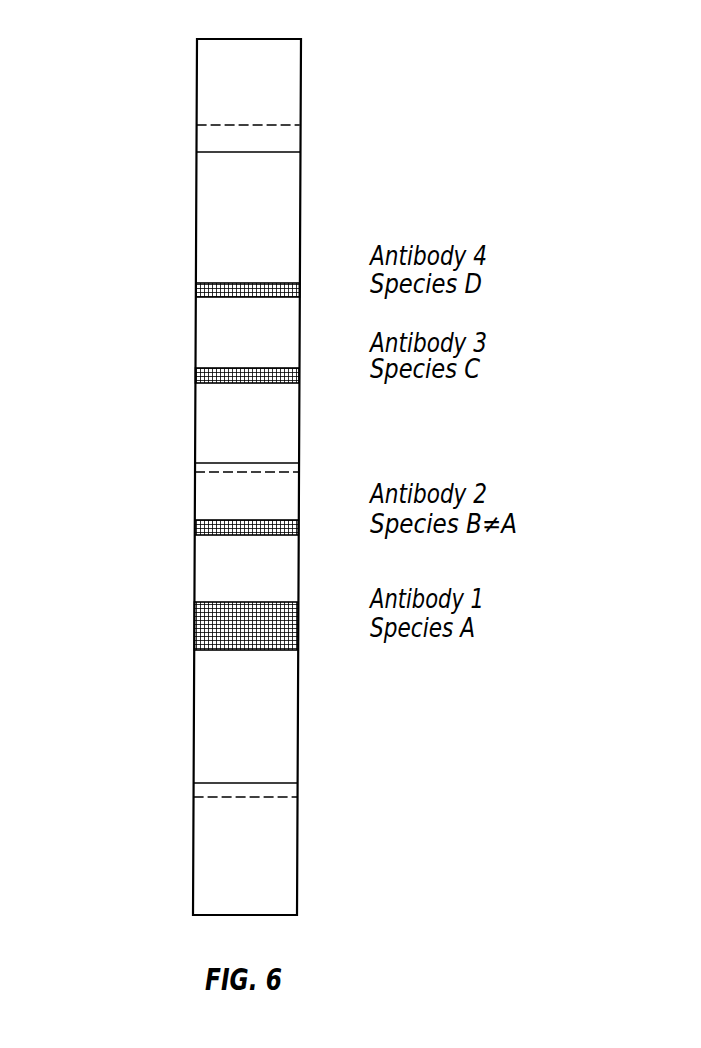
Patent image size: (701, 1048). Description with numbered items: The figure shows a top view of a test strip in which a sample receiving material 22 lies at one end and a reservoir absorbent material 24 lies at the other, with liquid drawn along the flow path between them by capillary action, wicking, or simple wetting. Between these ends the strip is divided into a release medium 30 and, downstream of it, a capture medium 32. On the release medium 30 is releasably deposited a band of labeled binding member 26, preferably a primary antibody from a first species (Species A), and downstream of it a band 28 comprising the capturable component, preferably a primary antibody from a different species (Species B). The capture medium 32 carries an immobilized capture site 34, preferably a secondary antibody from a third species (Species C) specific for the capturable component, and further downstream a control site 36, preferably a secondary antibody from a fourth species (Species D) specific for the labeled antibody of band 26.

The sample receiving material 22 is at (297, 858).
The reservoir absorbent material 24 is at (301, 98).
The band of labeled binding member 26 is at (285, 633).
The band comprising the capturable component 28 is at (288, 528).
The release medium 30 is at (147, 475).
The capture medium 32 is at (147, 137).
The capture site 34 is at (288, 377).
The control site 36 is at (288, 290).